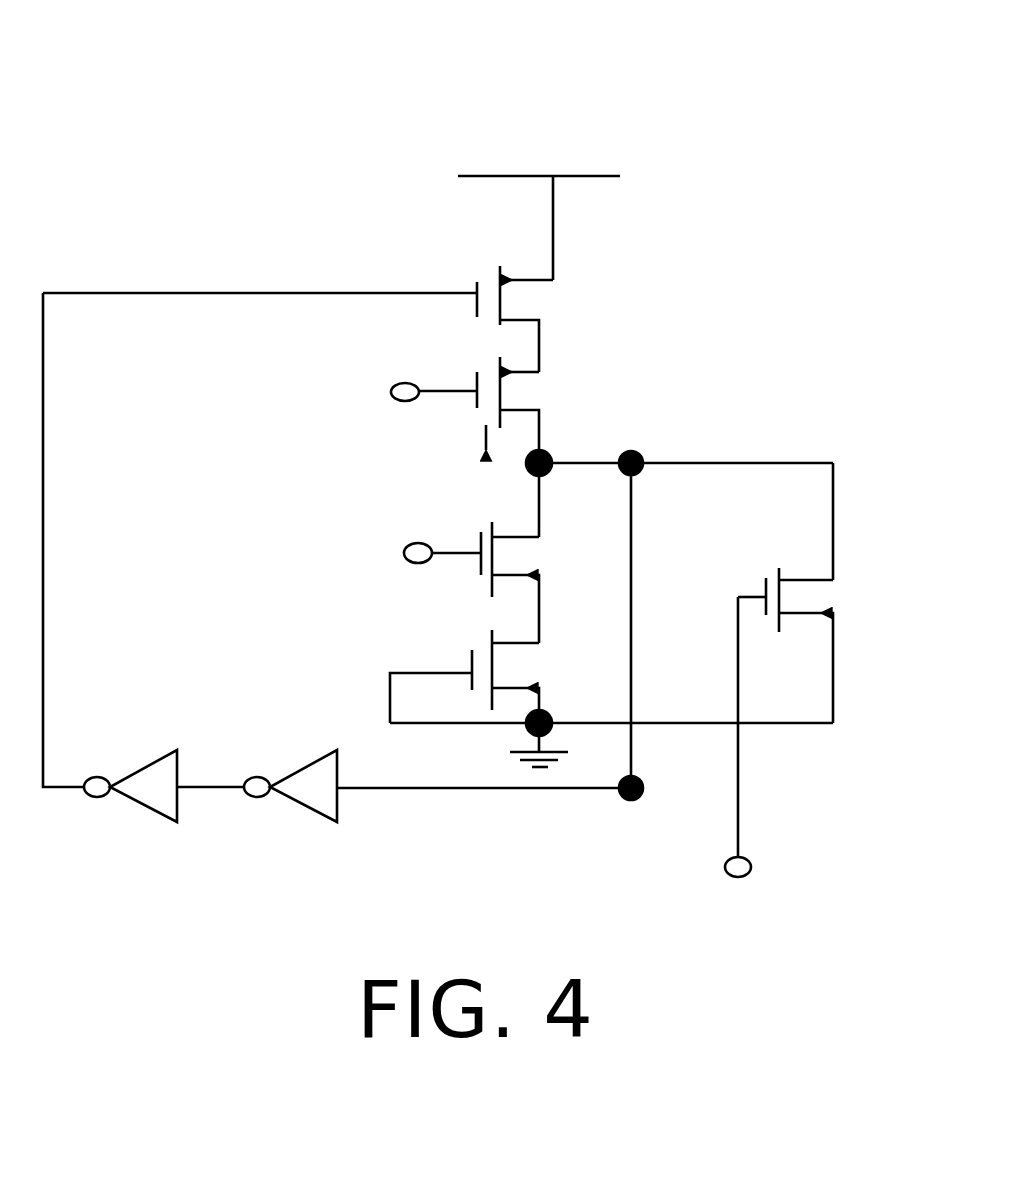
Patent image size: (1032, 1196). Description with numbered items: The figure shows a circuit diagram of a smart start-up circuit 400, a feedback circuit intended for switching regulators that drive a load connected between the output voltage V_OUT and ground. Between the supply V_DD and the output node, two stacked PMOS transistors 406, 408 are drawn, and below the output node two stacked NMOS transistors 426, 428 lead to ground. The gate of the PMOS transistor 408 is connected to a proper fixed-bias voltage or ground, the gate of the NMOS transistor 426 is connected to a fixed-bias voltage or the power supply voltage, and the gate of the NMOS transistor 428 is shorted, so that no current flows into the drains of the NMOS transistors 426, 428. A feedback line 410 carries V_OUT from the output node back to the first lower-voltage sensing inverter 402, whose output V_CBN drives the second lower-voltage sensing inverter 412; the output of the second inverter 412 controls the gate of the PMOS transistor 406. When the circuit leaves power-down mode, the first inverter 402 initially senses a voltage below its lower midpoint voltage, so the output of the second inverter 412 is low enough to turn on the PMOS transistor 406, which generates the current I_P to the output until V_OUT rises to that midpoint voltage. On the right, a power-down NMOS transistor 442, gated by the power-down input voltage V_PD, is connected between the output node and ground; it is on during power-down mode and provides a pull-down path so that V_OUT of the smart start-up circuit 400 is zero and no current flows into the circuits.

The smart start-up circuit 400 is at (520, 42).
The first lower-voltage sensing inverter 402 is at (296, 810).
The PMOS transistor 406 is at (552, 291).
The PMOS transistor 408 is at (538, 378).
The feedback line 410 is at (495, 815).
The second lower-voltage sensing inverter 412 is at (150, 812).
The NMOS transistor 426 is at (536, 549).
The NMOS transistor 428 is at (536, 656).
The power-down NMOS transistor 442 is at (847, 574).